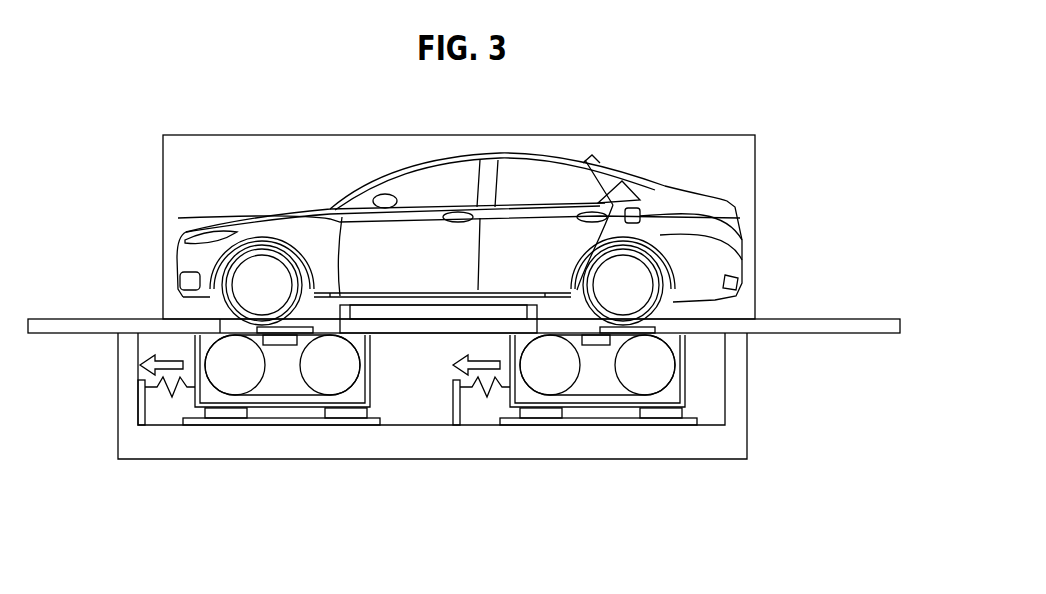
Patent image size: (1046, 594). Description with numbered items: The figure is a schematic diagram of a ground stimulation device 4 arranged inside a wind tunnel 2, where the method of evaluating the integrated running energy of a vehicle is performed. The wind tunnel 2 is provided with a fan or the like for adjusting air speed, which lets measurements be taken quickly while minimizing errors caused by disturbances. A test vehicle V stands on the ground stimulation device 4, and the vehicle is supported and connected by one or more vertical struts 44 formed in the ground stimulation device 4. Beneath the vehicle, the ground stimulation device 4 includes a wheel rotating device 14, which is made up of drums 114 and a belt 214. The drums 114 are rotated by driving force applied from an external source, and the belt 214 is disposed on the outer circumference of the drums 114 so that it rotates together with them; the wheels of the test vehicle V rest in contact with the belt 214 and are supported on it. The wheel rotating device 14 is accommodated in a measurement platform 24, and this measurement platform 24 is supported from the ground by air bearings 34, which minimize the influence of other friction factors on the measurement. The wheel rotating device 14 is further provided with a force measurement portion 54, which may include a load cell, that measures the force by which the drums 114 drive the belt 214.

The wind tunnel 2 is at (250, 162).
The ground stimulation device 4 is at (797, 319).
The test vehicle V is at (663, 193).
The wheel rotating device 14 is at (281, 441).
The drums 114 is at (332, 385).
The belt 214 is at (280, 400).
The measurement platform 24 is at (510, 405).
The air bearings 34 is at (542, 415).
The vertical struts 44 is at (525, 282).
The force measurement portion 54 is at (167, 380).